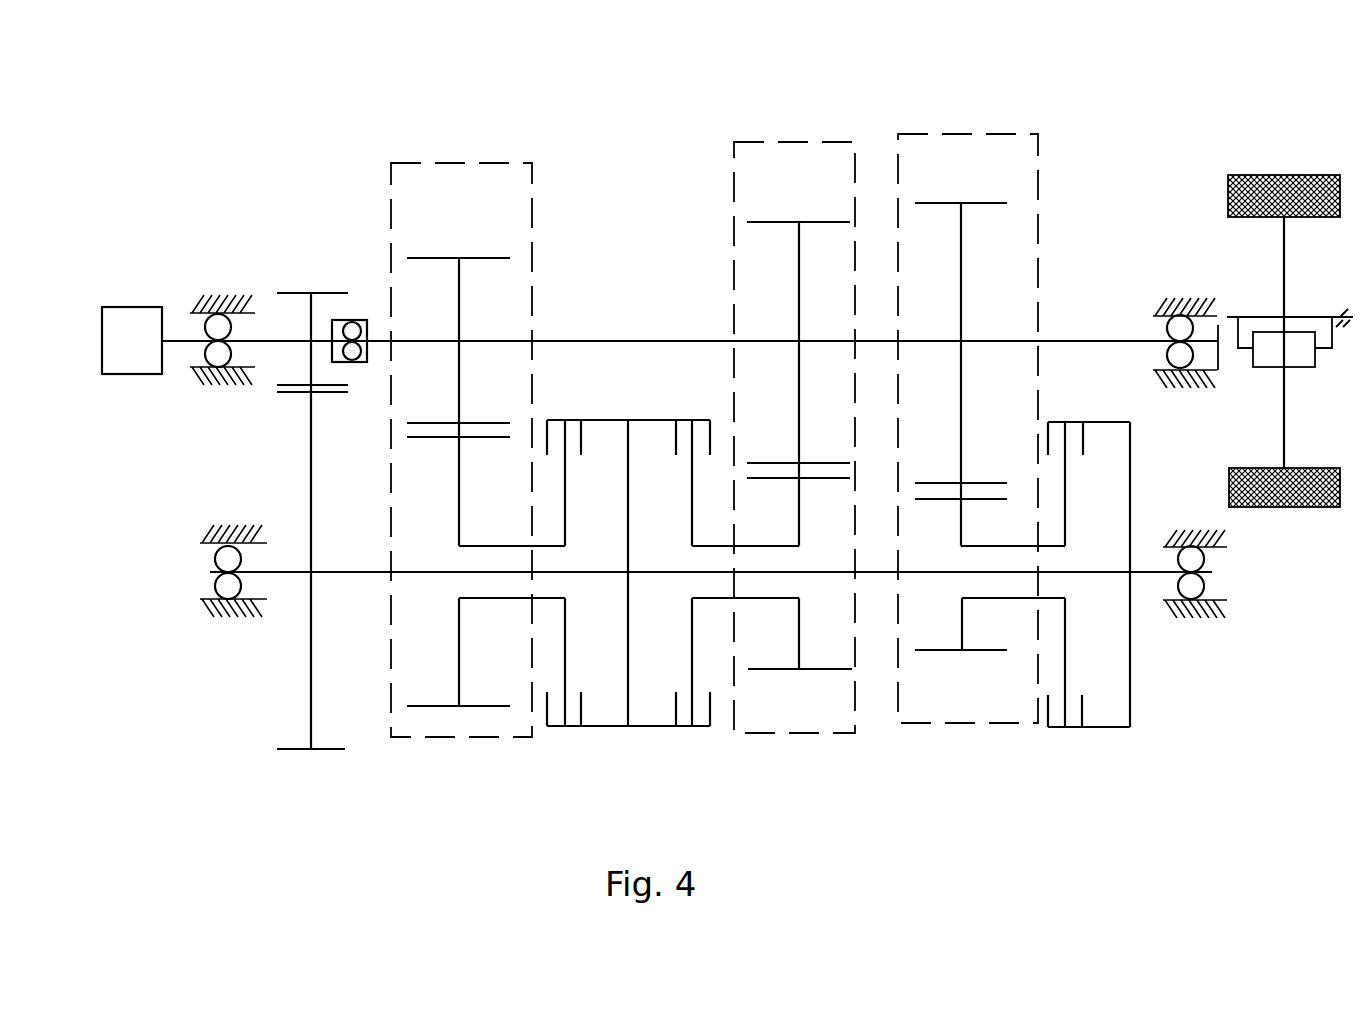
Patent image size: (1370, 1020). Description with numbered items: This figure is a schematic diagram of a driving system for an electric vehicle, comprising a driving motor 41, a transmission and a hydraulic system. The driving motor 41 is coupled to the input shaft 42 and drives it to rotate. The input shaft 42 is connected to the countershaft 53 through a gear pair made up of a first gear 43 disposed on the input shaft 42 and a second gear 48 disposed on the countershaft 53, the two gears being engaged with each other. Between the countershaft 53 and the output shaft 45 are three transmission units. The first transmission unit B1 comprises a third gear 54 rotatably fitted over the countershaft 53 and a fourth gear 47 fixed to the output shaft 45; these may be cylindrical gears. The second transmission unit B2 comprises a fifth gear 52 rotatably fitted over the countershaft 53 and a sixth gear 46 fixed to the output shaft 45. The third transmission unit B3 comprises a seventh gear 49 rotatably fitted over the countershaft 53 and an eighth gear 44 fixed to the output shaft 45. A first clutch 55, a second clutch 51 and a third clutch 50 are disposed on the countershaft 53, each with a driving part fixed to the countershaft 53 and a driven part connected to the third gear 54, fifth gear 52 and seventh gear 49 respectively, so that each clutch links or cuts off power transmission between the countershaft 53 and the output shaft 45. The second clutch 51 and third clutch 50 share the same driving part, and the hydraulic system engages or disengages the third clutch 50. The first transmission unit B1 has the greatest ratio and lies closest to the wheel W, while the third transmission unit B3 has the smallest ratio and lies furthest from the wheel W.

The driving motor 41 is at (132, 332).
The input shaft 42 is at (188, 341).
The first gear 43 is at (311, 293).
The eighth gear 44 is at (442, 258).
The output shaft 45 is at (627, 341).
The sixth gear 46 is at (778, 222).
The fourth gear 47 is at (960, 203).
The second gear 48 is at (321, 749).
The seventh gear 49 is at (477, 706).
The third clutch 50 is at (612, 720).
The second clutch 51 is at (670, 722).
The fifth gear 52 is at (798, 669).
The countershaft 53 is at (295, 572).
The third gear 54 is at (990, 650).
The first clutch 55 is at (1112, 727).
The first transmission unit B1 is at (1018, 134).
The second transmission unit B2 is at (832, 142).
The third transmission unit B3 is at (498, 163).
The wheel W is at (1246, 175).